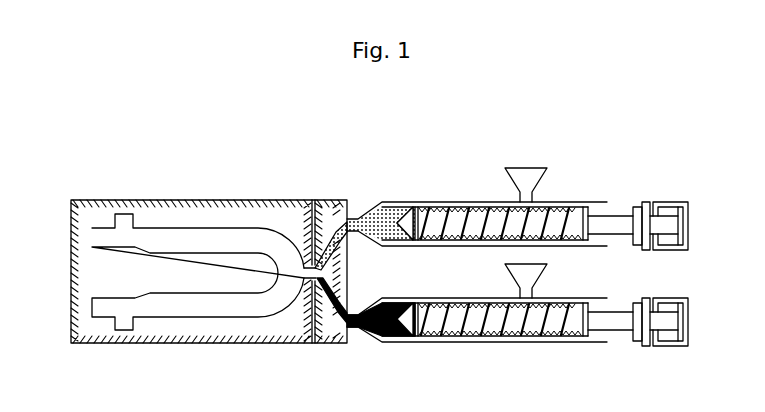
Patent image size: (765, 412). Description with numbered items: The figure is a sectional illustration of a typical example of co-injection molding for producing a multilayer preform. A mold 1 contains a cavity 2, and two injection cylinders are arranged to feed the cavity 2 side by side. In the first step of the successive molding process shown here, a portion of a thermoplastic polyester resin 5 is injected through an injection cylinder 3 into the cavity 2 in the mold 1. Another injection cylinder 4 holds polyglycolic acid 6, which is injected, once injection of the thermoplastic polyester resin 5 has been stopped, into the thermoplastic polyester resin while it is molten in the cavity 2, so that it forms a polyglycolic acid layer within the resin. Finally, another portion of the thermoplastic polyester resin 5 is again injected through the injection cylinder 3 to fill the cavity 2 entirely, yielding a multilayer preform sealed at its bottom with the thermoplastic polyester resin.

The mold 1 is at (205, 200).
The cavity 2 is at (213, 307).
The injection cylinder 3 is at (517, 195).
The another injection cylinder 4 is at (517, 333).
The thermoplastic polyester resin 5 is at (387, 202).
The polyglycolic acid 6 is at (393, 338).